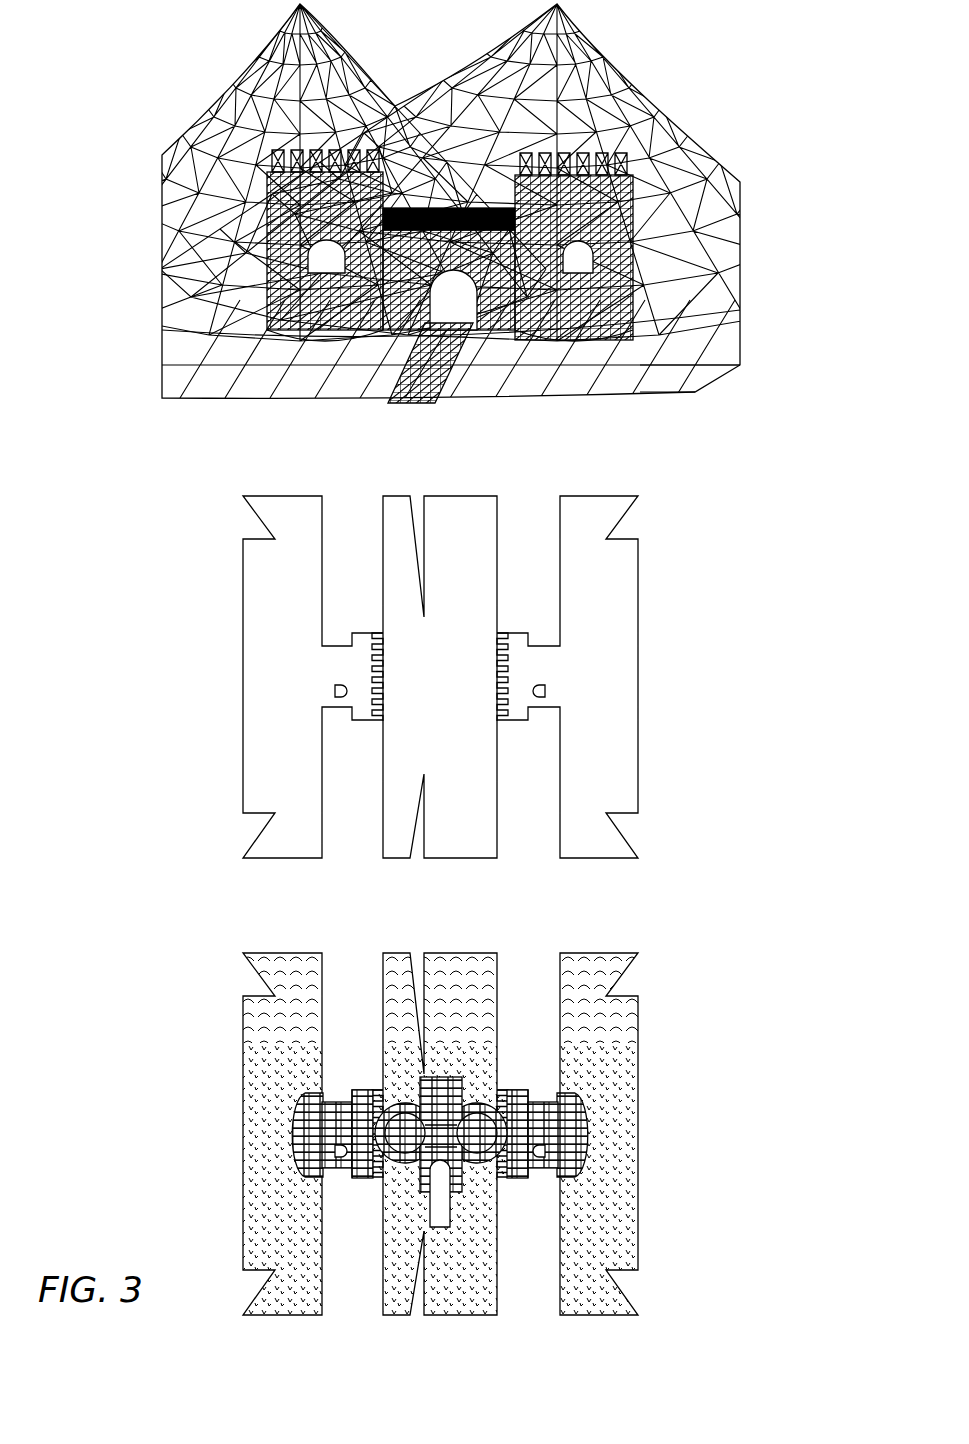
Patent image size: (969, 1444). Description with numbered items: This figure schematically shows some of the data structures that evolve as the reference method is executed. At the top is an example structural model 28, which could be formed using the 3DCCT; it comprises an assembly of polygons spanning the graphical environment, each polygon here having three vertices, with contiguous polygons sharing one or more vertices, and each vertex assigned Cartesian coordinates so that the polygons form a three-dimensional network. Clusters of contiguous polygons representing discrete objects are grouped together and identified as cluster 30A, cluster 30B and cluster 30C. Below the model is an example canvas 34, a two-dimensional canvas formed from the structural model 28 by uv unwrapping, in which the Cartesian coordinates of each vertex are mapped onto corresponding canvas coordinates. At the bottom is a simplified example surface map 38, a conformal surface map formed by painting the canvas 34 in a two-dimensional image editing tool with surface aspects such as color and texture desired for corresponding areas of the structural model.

The structural model 28 is at (153, 61).
The cluster 30A is at (648, 218).
The cluster 30B is at (698, 342).
The cluster 30C is at (455, 404).
The canvas 34 is at (196, 566).
The surface map 38 is at (201, 1044).